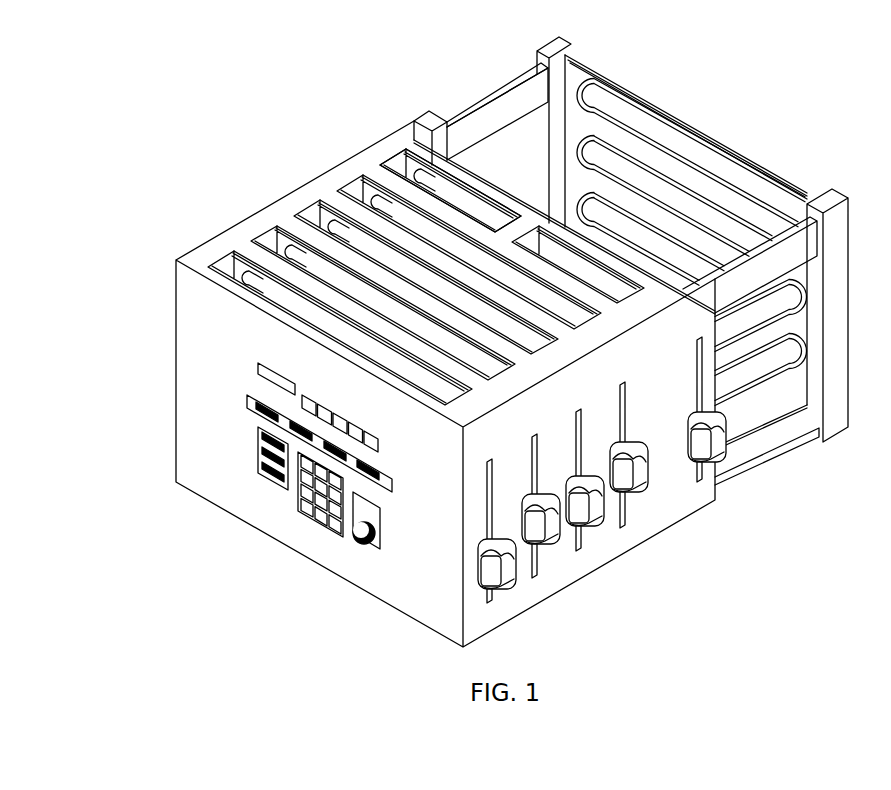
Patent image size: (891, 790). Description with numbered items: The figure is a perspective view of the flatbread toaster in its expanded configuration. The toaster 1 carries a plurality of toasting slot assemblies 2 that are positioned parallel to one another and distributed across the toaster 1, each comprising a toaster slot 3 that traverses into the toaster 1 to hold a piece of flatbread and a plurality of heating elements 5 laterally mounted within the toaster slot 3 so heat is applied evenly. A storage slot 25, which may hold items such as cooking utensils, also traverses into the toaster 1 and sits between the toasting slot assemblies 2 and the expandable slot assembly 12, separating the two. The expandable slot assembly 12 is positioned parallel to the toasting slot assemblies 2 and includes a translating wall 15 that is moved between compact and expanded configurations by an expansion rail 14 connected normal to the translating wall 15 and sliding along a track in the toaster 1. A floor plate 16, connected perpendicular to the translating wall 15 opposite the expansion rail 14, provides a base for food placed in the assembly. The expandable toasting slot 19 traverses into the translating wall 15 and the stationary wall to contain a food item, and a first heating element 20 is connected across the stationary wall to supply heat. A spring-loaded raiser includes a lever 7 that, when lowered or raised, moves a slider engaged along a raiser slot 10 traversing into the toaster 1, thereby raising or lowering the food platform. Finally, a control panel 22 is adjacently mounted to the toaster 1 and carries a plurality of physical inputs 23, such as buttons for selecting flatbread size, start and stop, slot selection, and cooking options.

The toaster 1 is at (158, 470).
The toasting slot assemblies 2 is at (307, 199).
The toaster slot 3 is at (370, 185).
The heating elements 5 is at (340, 222).
The storage slot 25 is at (405, 165).
The lever 7 is at (542, 492).
The raiser slot 10 is at (492, 493).
The expandable slot assembly 12 is at (792, 461).
The expansion rail 14 is at (492, 129).
The translating wall 15 is at (684, 201).
The floor plate 16 is at (753, 394).
The expandable toasting slot 19 is at (510, 96).
The first heating element 20 is at (587, 103).
The control panel 22 is at (235, 366).
The physical inputs 23 is at (370, 428).